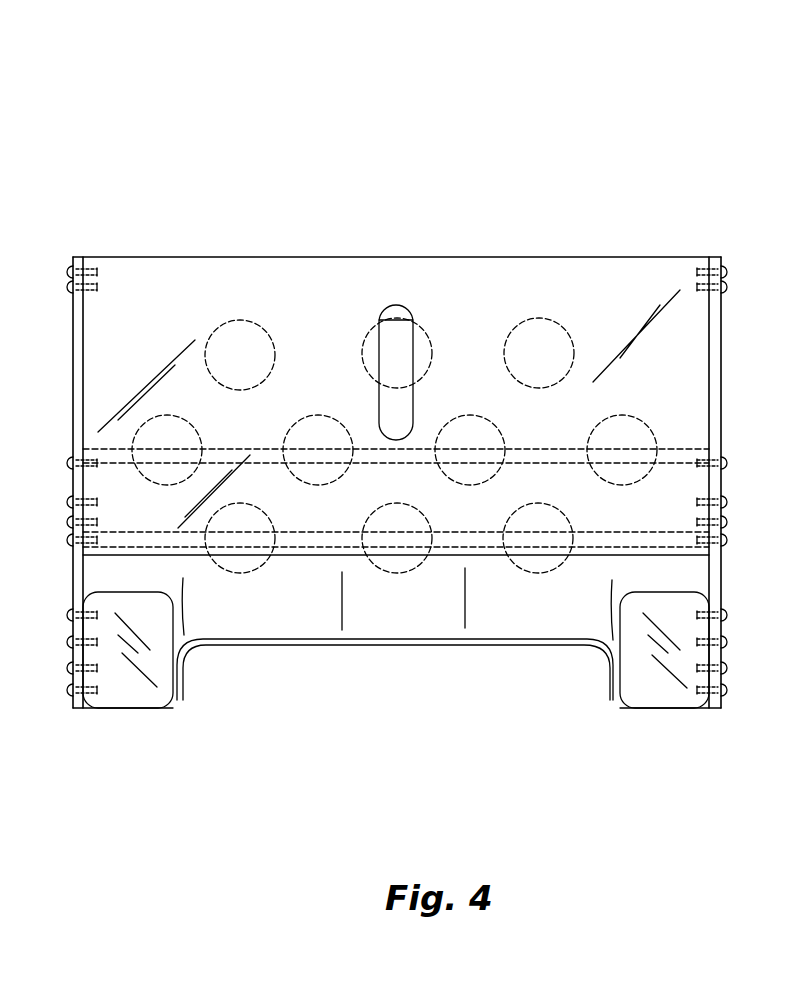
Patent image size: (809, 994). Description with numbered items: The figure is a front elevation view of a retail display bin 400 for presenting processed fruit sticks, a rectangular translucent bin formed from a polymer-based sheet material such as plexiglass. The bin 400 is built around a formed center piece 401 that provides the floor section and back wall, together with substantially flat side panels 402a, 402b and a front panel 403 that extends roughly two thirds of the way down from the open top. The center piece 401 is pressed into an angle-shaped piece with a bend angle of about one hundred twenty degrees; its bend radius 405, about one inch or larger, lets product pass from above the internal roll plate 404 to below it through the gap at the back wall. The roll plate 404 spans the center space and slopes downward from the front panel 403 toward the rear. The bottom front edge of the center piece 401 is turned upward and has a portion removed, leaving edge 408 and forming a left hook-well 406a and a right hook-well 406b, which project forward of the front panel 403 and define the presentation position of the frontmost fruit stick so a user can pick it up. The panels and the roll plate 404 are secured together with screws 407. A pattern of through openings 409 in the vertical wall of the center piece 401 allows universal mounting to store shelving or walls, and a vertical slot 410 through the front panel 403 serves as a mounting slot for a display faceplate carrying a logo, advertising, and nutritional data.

The retail display bin 400 is at (383, 153).
The formed center piece 401 is at (485, 257).
The side panel 402a is at (85, 357).
The side panel 402b is at (709, 335).
The front panel 403 is at (327, 312).
The internal roll plate 404 is at (238, 449).
The bend radius 405 is at (420, 610).
The left hook-well 406a is at (118, 710).
The right hook-well 406b is at (670, 710).
The screws 407 is at (727, 668).
The edge 408 is at (508, 647).
The apertures 409 is at (497, 432).
The handle slot 410 is at (413, 350).